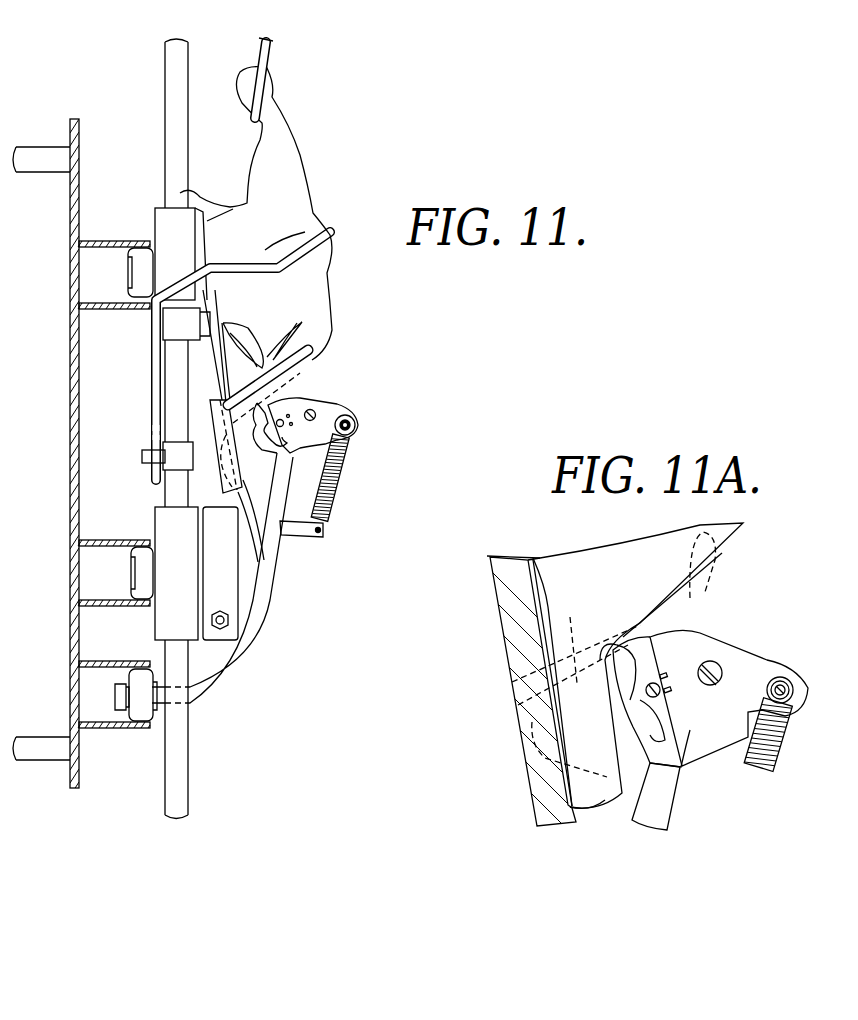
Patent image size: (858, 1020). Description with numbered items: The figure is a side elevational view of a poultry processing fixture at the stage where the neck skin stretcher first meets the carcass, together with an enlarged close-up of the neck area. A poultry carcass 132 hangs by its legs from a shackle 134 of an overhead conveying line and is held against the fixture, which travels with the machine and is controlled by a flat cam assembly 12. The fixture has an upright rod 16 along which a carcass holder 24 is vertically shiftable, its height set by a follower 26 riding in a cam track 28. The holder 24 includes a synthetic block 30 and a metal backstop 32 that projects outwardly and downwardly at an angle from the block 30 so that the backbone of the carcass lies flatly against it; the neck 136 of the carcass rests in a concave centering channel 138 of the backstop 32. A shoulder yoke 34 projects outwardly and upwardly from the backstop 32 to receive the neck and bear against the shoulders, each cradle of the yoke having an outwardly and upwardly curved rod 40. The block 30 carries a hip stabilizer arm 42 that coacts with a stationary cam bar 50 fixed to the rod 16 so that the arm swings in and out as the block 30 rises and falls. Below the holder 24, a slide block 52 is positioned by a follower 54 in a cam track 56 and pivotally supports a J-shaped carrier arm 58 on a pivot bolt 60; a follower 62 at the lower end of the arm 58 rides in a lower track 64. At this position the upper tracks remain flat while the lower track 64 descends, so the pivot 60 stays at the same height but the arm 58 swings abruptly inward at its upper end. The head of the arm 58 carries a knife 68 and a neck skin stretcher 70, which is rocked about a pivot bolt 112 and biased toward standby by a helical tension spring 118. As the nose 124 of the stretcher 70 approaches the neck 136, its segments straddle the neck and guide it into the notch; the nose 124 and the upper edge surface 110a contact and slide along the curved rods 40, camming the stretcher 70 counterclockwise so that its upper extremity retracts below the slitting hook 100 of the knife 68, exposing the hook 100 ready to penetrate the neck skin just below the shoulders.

In FIG. 11, the flat cam assembly 12 is at (87, 126).
In FIG. 11, the upright rod 16 is at (187, 60).
In FIG. 11, the carcass holder 24 is at (152, 207).
In FIG. 11, the follower 26 is at (136, 268).
In FIG. 11, the cam track 28 is at (88, 288).
In FIG. 11, the block 30 is at (160, 232).
In FIG. 11, the backstop 32 is at (210, 378).
In FIG. 11, the shoulder yoke 34 is at (320, 330).
In FIG. 11, the curved rod 40 is at (300, 362).
In FIG. 11A, the curved rod 40 is at (705, 568).
In FIG. 11, the hip stabilizer arm 42 is at (310, 247).
In FIG. 11, the cam bar 50 is at (142, 457).
In FIG. 11, the slide block 52 is at (228, 600).
In FIG. 11, the follower 54 is at (137, 555).
In FIG. 11, the cam track 56 is at (95, 582).
In FIG. 11, the carrier arm 58 is at (264, 573).
In FIG. 11A, the carrier arm 58 is at (660, 806).
In FIG. 11, the pivot bolt 60 is at (218, 632).
In FIG. 11, the follower 62 is at (141, 724).
In FIG. 11, the cam track 64 is at (93, 692).
In FIG. 11, the knife 68 is at (292, 397).
In FIG. 11A, the knife 68 is at (625, 710).
In FIG. 11, the neck skin stretcher 70 is at (364, 432).
In FIG. 11A, the neck skin stretcher 70 is at (797, 657).
In FIG. 11A, the slitting hook 100 is at (622, 630).
In FIG. 11A, the upper external edge surface 110a is at (576, 686).
In FIG. 11, the pivot bolt 112 is at (318, 413).
In FIG. 11A, the pivot bolt 112 is at (722, 672).
In FIG. 11, the helical tension spring 118 is at (337, 478).
In FIG. 11A, the helical tension spring 118 is at (777, 744).
In FIG. 11A, the nose 124 is at (523, 746).
In FIG. 11, the poultry carcass 132 is at (320, 212).
In FIG. 11A, the poultry carcass 132 is at (556, 550).
In FIG. 11, the shackle 134 is at (267, 63).
In FIG. 11, the neck 136 is at (268, 558).
In FIG. 11A, the neck 136 is at (590, 797).
In FIG. 11, the centering channel 138 is at (226, 485).
In FIG. 11A, the centering channel 138 is at (535, 808).